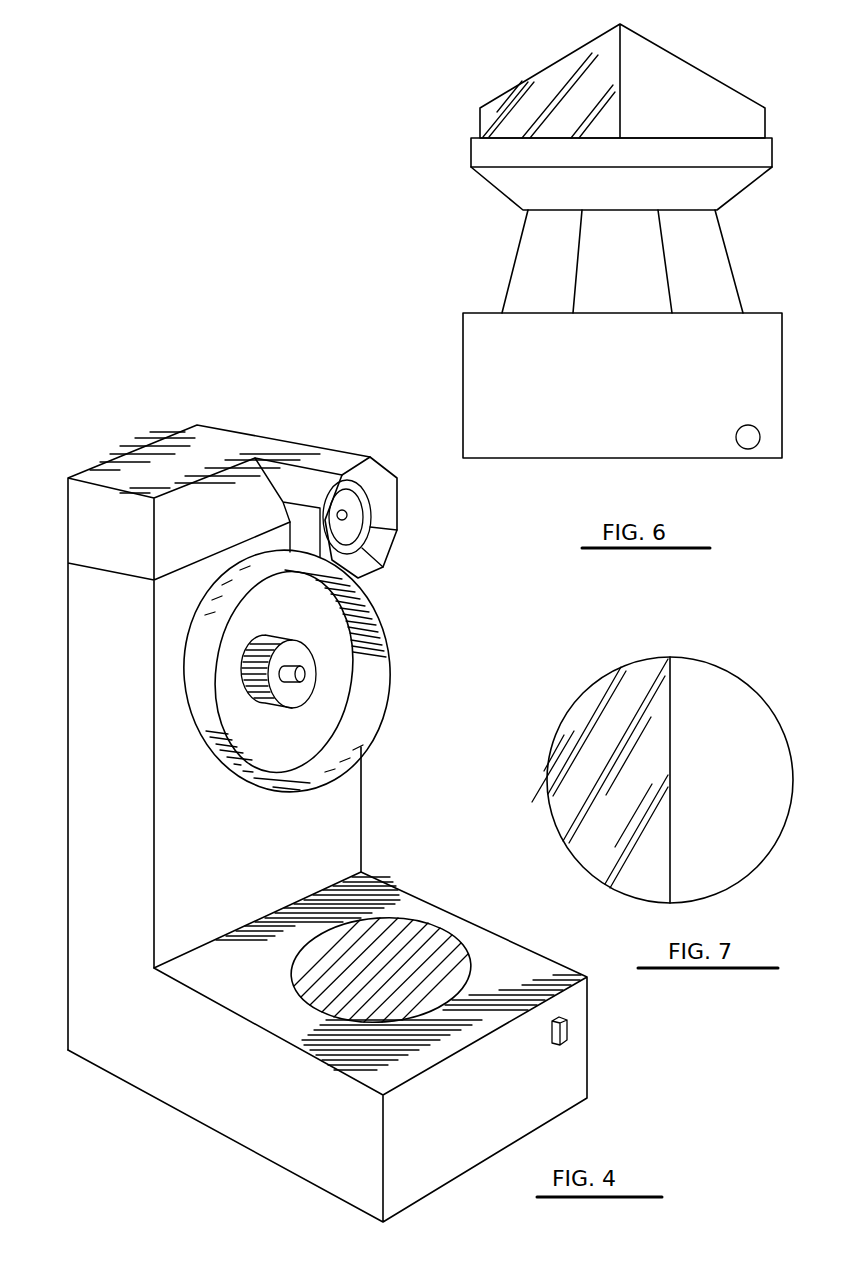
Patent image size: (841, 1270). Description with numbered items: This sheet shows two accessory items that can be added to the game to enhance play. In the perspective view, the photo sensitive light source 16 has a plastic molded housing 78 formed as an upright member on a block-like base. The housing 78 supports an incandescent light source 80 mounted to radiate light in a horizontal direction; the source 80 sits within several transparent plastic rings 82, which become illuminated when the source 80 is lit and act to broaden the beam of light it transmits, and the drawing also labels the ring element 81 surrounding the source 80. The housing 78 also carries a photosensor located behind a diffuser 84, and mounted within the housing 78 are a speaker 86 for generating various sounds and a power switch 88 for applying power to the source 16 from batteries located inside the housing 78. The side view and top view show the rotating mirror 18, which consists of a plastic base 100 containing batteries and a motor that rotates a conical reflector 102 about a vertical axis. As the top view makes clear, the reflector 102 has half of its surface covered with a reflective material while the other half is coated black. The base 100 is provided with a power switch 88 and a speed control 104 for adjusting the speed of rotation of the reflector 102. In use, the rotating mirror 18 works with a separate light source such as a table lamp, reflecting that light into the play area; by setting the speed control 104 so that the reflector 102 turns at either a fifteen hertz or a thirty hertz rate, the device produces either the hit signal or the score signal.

In FIG. 4, the photo sensitive light source 16 is at (440, 690).
In FIG. 6, the rotating mirror 18 is at (460, 240).
In FIG. 4, the housing 78 is at (68, 772).
In FIG. 4, the incandescent light source 80 is at (302, 684).
In FIG. 4, the grinding wheel 81 is at (307, 642).
In FIG. 4, the transparent plastic rings 82 is at (346, 513).
In FIG. 4, the diffuser 84 is at (350, 533).
In FIG. 4, the speaker 86 is at (447, 968).
In FIG. 4, the power switch 88 is at (548, 1037).
In FIG. 6, the base 100 is at (462, 325).
In FIG. 6, the conical reflector 102 is at (707, 72).
In FIG. 7, the conical reflector 102 is at (703, 660).
In FIG. 6, the speed control 104 is at (738, 438).